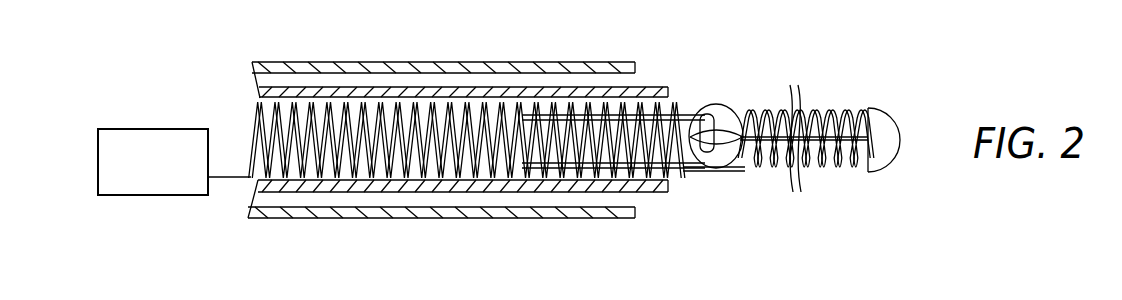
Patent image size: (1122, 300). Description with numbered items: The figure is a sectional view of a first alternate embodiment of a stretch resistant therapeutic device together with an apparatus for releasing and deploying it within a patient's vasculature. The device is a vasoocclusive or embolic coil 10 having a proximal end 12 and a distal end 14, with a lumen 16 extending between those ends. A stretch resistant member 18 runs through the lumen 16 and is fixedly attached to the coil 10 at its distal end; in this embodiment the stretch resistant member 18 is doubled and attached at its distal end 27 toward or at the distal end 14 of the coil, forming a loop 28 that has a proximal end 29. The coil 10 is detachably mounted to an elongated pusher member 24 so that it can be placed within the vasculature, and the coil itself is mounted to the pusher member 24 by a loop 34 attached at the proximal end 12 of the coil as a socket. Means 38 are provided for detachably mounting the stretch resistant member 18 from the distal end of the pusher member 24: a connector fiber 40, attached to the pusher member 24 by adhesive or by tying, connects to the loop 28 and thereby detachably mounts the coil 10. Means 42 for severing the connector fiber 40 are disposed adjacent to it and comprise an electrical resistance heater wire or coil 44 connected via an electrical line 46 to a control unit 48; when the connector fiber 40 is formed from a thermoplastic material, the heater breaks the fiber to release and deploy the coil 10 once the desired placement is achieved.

The vasoocclusive coil 10 is at (816, 90).
The proximal end 12 is at (742, 168).
The distal end 14 is at (876, 108).
The lumen 16 is at (807, 182).
The stretch resistant member 18 is at (846, 158).
The elongated pusher member 24 is at (257, 140).
The distal end of the stretch resistant member 27 is at (877, 120).
The loop 28 is at (727, 133).
The proximal end of the loop 29 is at (705, 112).
The loop 34 is at (728, 172).
The means for detachably mounting 38 is at (693, 98).
The connector fiber 40 is at (525, 113).
The means for severing the connector fiber 42 is at (160, 205).
The electrical resistance heater wire or coil 44 is at (685, 172).
The electrical line 46 is at (223, 180).
The control unit 48 is at (118, 129).